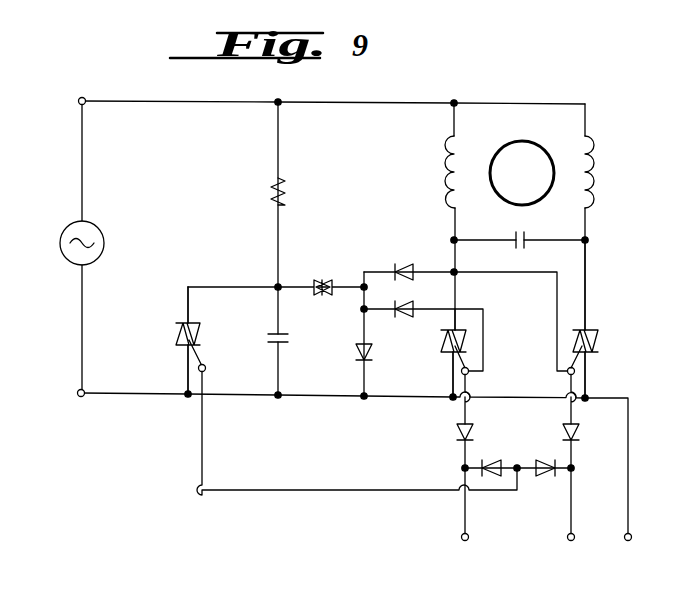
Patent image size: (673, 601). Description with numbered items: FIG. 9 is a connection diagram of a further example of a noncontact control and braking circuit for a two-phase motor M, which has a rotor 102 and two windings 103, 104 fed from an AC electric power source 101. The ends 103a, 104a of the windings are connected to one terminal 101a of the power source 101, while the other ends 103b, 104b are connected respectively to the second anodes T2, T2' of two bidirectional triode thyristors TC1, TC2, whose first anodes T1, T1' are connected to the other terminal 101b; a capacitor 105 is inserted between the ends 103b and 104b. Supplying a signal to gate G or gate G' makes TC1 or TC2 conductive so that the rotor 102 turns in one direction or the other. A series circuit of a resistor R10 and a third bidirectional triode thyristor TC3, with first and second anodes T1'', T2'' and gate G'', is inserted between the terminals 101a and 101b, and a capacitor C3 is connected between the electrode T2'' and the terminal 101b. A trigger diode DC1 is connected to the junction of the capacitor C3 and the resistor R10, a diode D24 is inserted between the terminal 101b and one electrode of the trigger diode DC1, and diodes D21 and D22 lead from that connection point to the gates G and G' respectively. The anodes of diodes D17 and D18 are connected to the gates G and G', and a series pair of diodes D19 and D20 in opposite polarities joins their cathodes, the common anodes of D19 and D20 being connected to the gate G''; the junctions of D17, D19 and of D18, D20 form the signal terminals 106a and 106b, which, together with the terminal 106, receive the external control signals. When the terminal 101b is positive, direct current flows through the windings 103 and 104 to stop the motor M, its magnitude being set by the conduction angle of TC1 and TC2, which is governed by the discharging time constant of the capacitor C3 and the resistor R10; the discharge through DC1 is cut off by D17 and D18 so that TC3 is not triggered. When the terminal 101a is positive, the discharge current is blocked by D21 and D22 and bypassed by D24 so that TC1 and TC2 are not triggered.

The AC electric power source 101 is at (59, 245).
The terminal of the power source 101a is at (80, 102).
The terminal of the power source 101b is at (78, 394).
The rotor 102 is at (514, 145).
The two-phase motor M is at (564, 140).
The winding 103 is at (446, 180).
The winding 104 is at (593, 180).
The end of winding 103a is at (453, 102).
The end of winding 104a is at (585, 103).
The end of winding 103b is at (455, 244).
The end of winding 104b is at (584, 244).
The capacitor 105 is at (514, 237).
The output terminal 106 is at (628, 541).
The terminal 106a is at (465, 541).
The terminal 106b is at (571, 541).
The resistor R10 is at (271, 192).
The capacitor C3 is at (282, 336).
The trigger diode DC1 is at (323, 278).
The diode D17 is at (457, 433).
The diode D18 is at (579, 433).
The diode D19 is at (490, 452).
The diode D20 is at (549, 452).
The diode D21 is at (412, 304).
The diode D22 is at (408, 256).
The diode D24 is at (356, 350).
The bidirectional triode thyristor TC1 is at (439, 343).
The bidirectional triode thyristor TC2 is at (598, 343).
The bidirectional triode thyristor TC3 is at (176, 335).
The first anode T1 is at (435, 374).
The second anode T2 is at (437, 322).
The gate G is at (475, 384).
The first anode T1' is at (607, 375).
The second anode T2' is at (611, 287).
The gate G' is at (560, 385).
The first anode T1'' is at (166, 369).
The second anode T2'' is at (213, 305).
The gate G'' is at (215, 370).